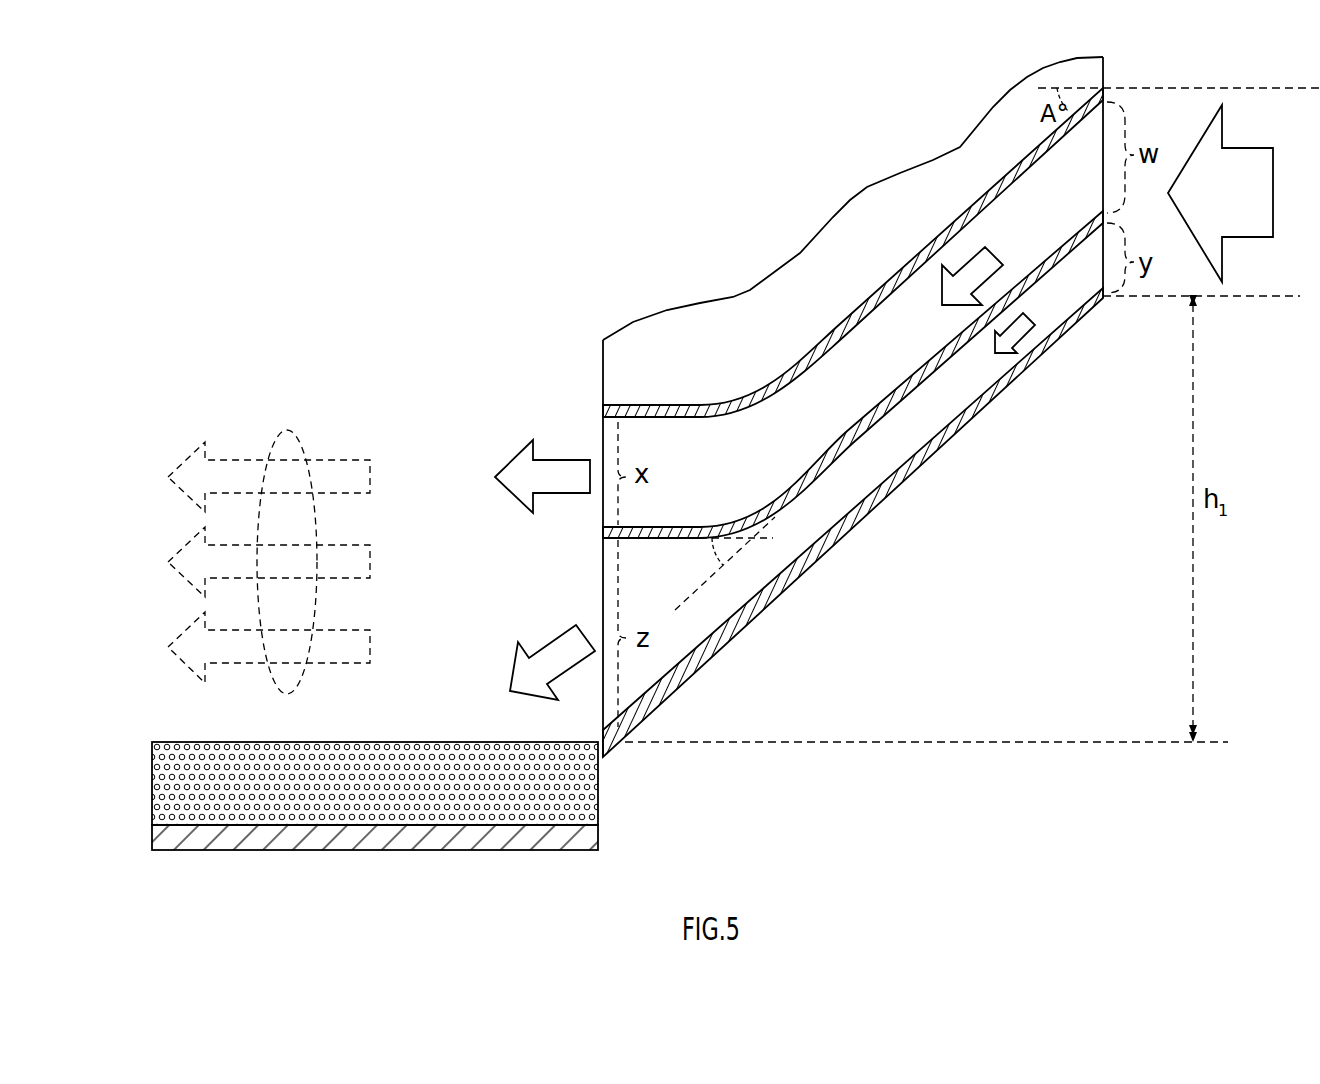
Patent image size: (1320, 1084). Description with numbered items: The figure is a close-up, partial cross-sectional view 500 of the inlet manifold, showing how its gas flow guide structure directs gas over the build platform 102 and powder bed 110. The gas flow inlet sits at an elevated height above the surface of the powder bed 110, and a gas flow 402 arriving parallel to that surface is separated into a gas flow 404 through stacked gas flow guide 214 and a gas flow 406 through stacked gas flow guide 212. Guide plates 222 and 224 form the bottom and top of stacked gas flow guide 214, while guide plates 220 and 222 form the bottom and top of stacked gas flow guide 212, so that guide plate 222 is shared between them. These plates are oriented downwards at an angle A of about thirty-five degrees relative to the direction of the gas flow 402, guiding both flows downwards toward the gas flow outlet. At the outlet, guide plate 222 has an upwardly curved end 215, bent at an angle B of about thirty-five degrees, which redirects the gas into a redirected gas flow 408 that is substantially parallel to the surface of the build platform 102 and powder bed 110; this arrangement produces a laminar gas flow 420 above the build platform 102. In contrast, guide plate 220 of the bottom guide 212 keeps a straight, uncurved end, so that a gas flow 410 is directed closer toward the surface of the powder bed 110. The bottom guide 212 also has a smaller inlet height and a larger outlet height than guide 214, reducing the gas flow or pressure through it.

The close-up partial cross-sectional view 500 is at (610, 252).
The gas flow 402 is at (1238, 148).
The gas flow through stacked gas flow guide 214 404 is at (1000, 256).
The gas flow through stacked gas flow guide 212 406 is at (1027, 335).
The redirected gas flow 408 is at (503, 467).
The gas flow 410 is at (510, 680).
The laminar gas flow 420 is at (277, 443).
The guide plate 224 is at (925, 252).
The guide plate 222 is at (935, 366).
The guide plate 220 is at (912, 457).
The stacked gas flow guide 214 is at (640, 437).
The stacked gas flow guide 212 is at (642, 588).
The upwardly curved end 215 is at (680, 528).
The powder bed 110 is at (163, 718).
The build platform 102 is at (263, 850).